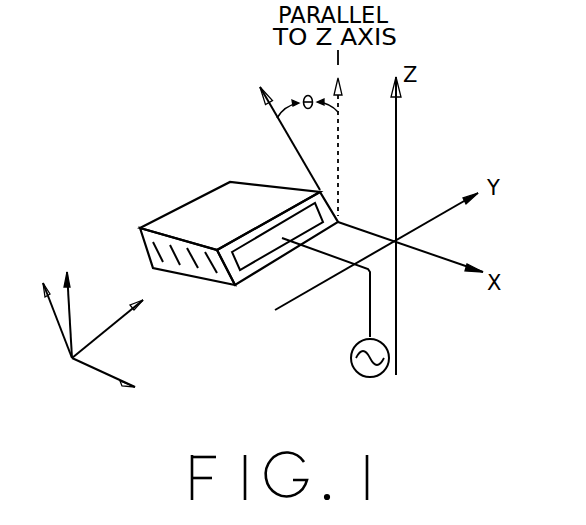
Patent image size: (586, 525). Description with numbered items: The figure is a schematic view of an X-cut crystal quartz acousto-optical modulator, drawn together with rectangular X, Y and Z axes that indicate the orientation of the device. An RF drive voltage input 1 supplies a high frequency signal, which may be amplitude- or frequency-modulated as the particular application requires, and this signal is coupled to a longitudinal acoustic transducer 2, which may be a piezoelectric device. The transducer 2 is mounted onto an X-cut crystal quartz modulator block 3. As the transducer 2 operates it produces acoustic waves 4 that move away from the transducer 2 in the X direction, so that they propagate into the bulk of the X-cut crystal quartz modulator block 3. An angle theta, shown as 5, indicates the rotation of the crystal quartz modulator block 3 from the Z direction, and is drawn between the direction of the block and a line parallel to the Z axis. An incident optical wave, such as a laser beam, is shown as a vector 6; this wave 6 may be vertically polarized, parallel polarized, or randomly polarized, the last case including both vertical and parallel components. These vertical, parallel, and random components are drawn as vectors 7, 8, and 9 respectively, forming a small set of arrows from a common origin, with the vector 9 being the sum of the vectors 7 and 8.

The RF drive voltage input 1 is at (351, 362).
The longitudinal acoustic transducer 2 is at (253, 258).
The X-cut crystal quartz modulator block 3 is at (163, 217).
The acoustic waves 4 is at (147, 253).
The angle theta 5 is at (308, 95).
The incident optical wave vector 6 is at (109, 329).
The vertical polarization component vector 7 is at (63, 336).
The parallel polarization component vector 8 is at (108, 372).
The random polarization component vector 9 is at (59, 305).